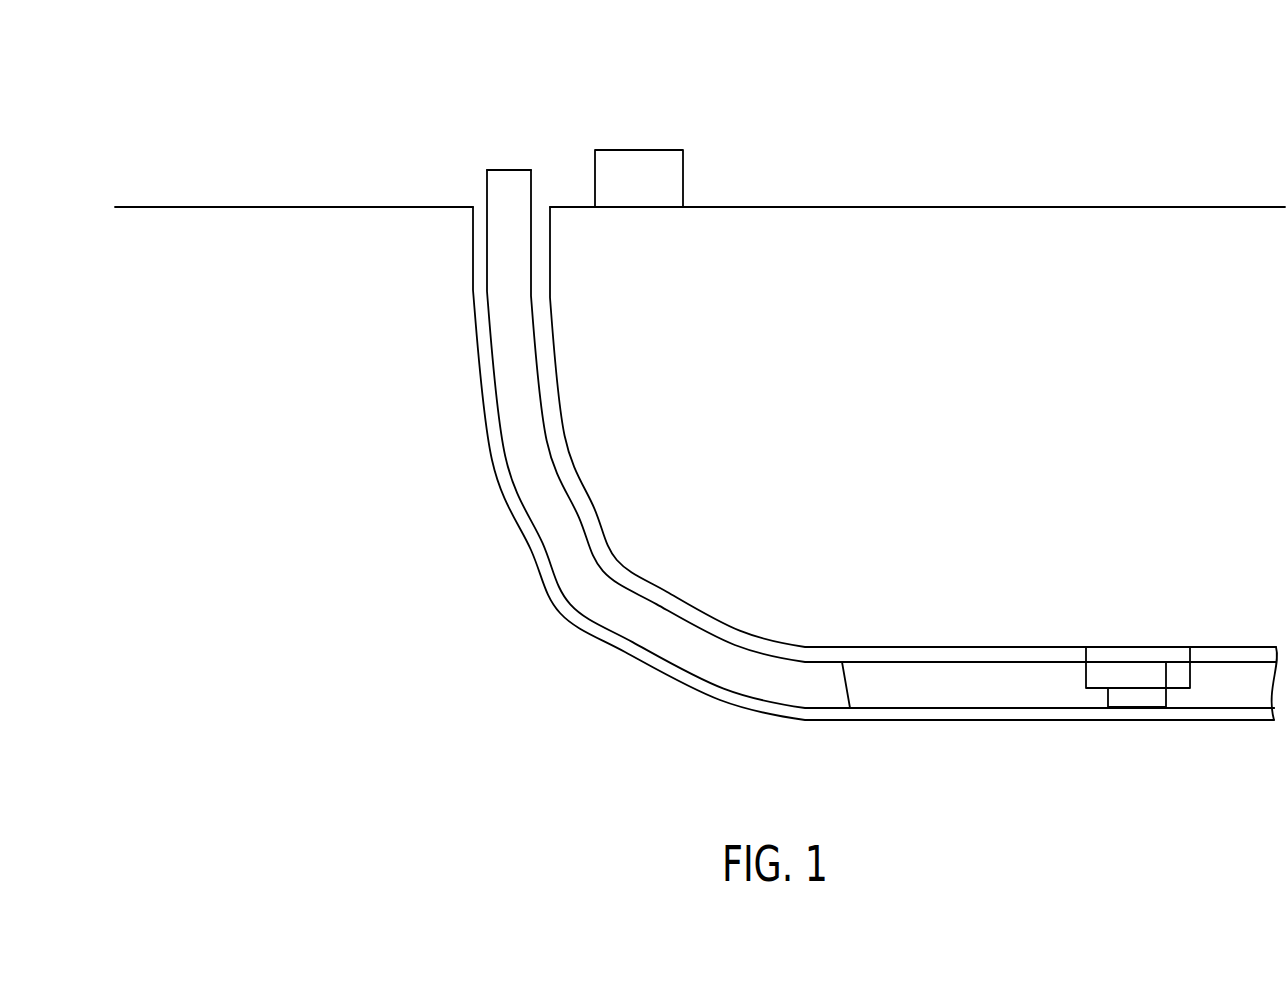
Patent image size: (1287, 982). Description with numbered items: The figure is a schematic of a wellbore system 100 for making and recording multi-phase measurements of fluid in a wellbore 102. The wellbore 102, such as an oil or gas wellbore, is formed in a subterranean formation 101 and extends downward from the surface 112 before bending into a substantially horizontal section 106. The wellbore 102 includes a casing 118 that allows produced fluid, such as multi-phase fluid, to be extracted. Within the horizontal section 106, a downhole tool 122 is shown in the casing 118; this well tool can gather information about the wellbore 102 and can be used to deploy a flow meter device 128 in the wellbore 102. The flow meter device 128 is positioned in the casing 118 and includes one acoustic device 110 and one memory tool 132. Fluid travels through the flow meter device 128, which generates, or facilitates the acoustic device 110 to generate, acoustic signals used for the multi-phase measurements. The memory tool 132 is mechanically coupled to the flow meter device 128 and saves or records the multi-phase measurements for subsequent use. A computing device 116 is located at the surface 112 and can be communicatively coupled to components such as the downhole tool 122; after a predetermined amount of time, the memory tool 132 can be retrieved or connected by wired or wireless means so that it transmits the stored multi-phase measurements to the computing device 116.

The wellbore system 100 is at (160, 117).
The subterranean formation 101 is at (290, 446).
The wellbore 102 is at (510, 527).
The substantially horizontal section 106 is at (1036, 578).
The acoustic device 110 is at (1135, 703).
The surface 112 is at (858, 207).
The computing device 116 is at (638, 162).
The casing 118 is at (492, 258).
The downhole tool 122 is at (897, 698).
The flow meter device 128 is at (1137, 655).
The memory tool 132 is at (1177, 673).